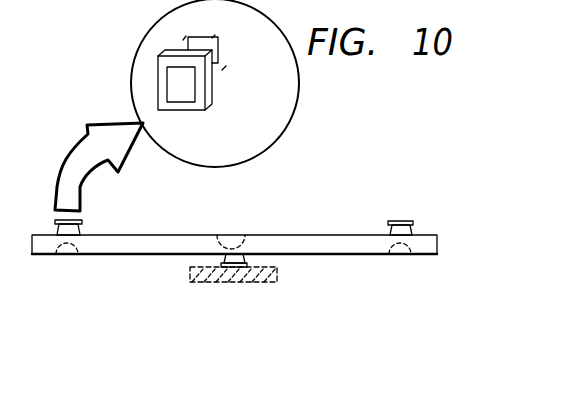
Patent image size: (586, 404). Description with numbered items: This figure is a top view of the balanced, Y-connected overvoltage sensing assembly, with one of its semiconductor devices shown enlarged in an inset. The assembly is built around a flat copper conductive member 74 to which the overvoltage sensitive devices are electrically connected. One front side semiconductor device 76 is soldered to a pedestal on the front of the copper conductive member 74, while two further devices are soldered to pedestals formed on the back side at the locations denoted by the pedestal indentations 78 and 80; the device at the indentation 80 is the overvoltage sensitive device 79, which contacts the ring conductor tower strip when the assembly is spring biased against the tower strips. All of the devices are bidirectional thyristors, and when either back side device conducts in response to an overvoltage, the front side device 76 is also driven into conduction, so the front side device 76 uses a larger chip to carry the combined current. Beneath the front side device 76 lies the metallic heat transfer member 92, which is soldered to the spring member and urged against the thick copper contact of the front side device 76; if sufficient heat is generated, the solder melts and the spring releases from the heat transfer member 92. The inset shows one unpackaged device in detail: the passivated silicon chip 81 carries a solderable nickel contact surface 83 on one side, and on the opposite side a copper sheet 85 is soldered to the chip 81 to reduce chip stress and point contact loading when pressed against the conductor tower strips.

The copper conductive member 74 is at (150, 235).
The front side semiconductor device 76 is at (257, 259).
The pedestal indentation 78 is at (62, 257).
The semiconductor overvoltage sensitive device 79 is at (400, 221).
The pedestal indentation 80 is at (405, 253).
The silicon chip 81 is at (205, 107).
The solderable nickel contact surface 83 is at (183, 92).
The copper sheet 85 is at (227, 75).
The heat transfer member 92 is at (230, 283).